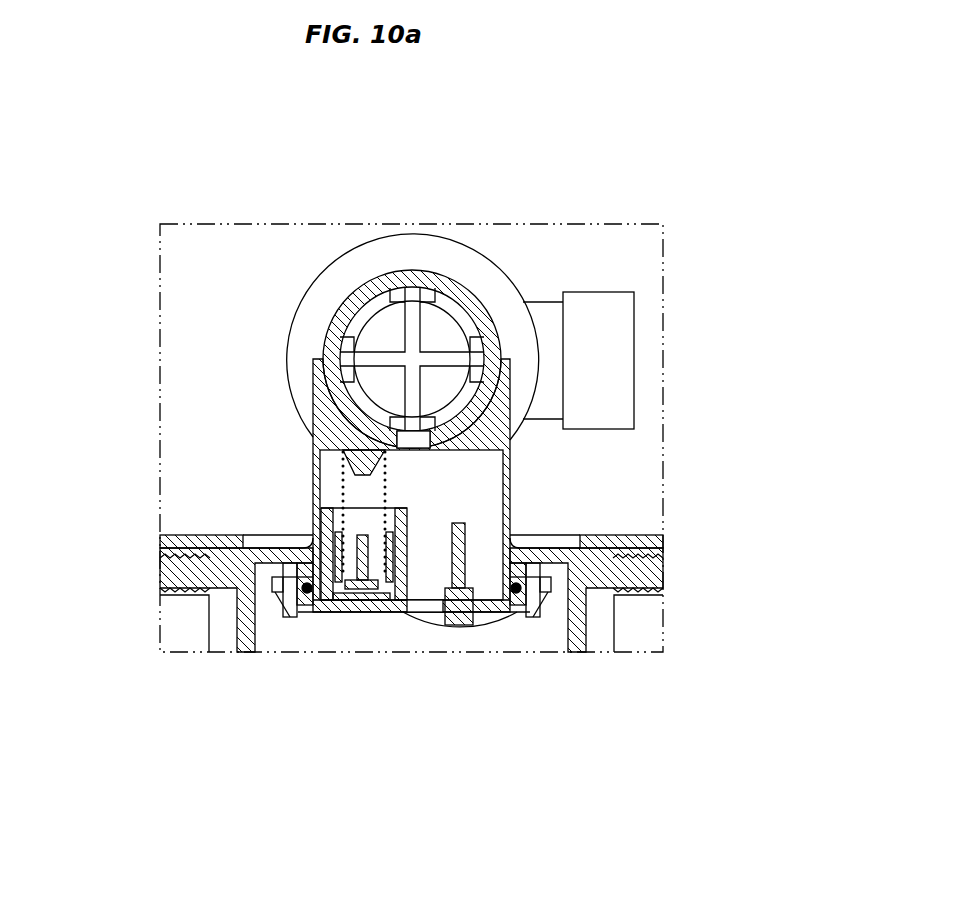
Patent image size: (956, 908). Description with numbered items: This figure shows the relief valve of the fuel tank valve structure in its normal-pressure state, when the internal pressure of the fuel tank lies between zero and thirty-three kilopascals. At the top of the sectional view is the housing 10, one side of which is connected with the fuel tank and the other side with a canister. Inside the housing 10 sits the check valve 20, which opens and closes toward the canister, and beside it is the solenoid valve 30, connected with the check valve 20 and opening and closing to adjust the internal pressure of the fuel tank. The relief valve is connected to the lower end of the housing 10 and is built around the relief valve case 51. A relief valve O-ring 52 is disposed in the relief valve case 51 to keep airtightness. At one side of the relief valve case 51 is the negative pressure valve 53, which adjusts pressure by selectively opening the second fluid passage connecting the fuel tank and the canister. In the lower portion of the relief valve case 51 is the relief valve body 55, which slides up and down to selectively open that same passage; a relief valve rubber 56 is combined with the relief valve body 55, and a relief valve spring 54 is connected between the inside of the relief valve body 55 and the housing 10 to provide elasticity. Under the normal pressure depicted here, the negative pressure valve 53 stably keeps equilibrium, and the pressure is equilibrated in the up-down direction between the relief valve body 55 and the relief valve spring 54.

The housing 10 is at (333, 415).
The check valve 20 is at (441, 338).
The solenoid valve 30 is at (549, 319).
The relief valve case 51 is at (400, 615).
The relief valve O-ring 52 is at (286, 615).
The negative pressure valve 53 is at (460, 628).
The relief valve spring 54 is at (342, 488).
The relief valve body 55 is at (329, 593).
The relief valve rubber 56 is at (363, 597).